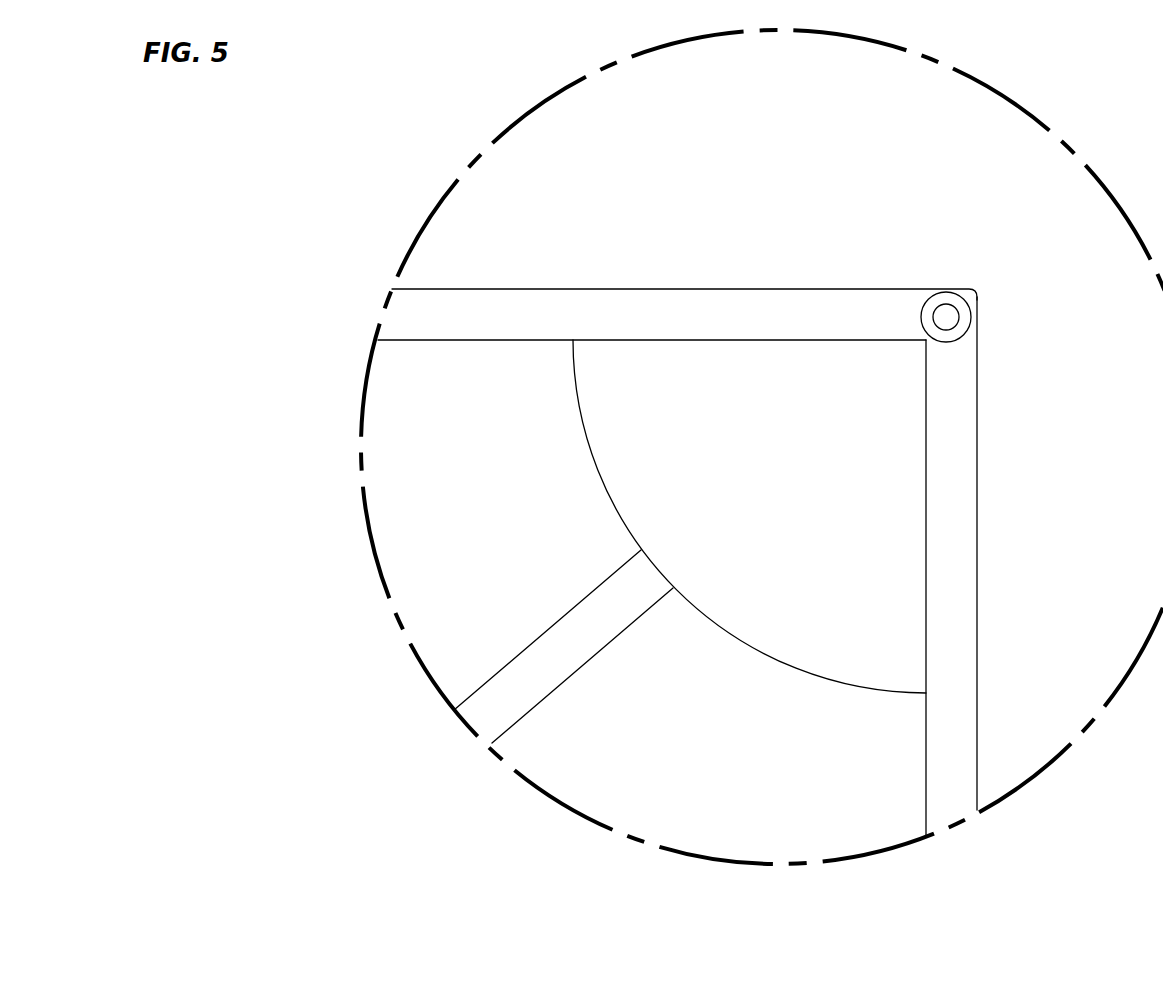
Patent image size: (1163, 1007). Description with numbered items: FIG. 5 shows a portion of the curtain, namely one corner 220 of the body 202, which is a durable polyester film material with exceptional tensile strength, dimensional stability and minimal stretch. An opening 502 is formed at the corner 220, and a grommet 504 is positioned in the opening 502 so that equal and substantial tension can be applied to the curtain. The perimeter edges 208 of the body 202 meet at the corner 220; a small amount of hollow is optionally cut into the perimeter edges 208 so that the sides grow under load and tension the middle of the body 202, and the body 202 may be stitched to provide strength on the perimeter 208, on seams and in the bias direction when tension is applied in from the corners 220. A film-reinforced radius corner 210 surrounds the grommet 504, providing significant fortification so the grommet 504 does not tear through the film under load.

The body 202 is at (650, 297).
The perimeter edges 208 is at (970, 541).
The film-reinforced radius corners 210 is at (893, 450).
The corner 220 is at (1007, 302).
The openings 502 is at (935, 306).
The grommet 504 is at (955, 303).